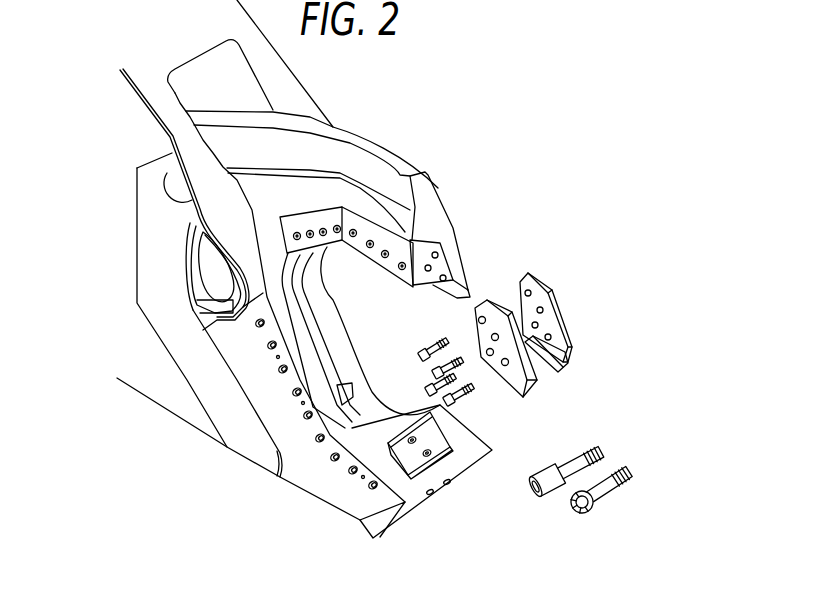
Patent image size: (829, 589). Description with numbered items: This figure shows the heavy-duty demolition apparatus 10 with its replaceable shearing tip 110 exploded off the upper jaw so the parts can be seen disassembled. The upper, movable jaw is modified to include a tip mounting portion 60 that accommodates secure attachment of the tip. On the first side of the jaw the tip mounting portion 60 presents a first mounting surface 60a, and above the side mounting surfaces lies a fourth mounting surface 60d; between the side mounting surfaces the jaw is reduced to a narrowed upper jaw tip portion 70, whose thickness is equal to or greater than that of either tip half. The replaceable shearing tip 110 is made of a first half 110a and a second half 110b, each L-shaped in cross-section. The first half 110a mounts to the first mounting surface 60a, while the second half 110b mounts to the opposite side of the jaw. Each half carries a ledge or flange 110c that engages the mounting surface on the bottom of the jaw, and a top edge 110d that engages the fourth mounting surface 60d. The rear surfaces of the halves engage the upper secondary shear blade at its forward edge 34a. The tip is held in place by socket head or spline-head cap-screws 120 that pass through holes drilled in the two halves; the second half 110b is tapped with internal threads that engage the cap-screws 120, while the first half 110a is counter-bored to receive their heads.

The heavy-duty demolition apparatus 10 is at (428, 84).
The forward edge 34a is at (414, 276).
The tip mounting portion 60 is at (458, 258).
The narrowed upper jaw tip portion 70 is at (440, 237).
The first mounting surface 60a is at (438, 279).
The fourth mounting surface 60d is at (458, 236).
The replaceable shearing tip 110 is at (600, 282).
The first half 110a is at (527, 378).
The second half 110b is at (563, 324).
The ledge or flange 110c is at (562, 353).
The top edge 110d is at (523, 275).
The cap-screws 120 is at (600, 450).